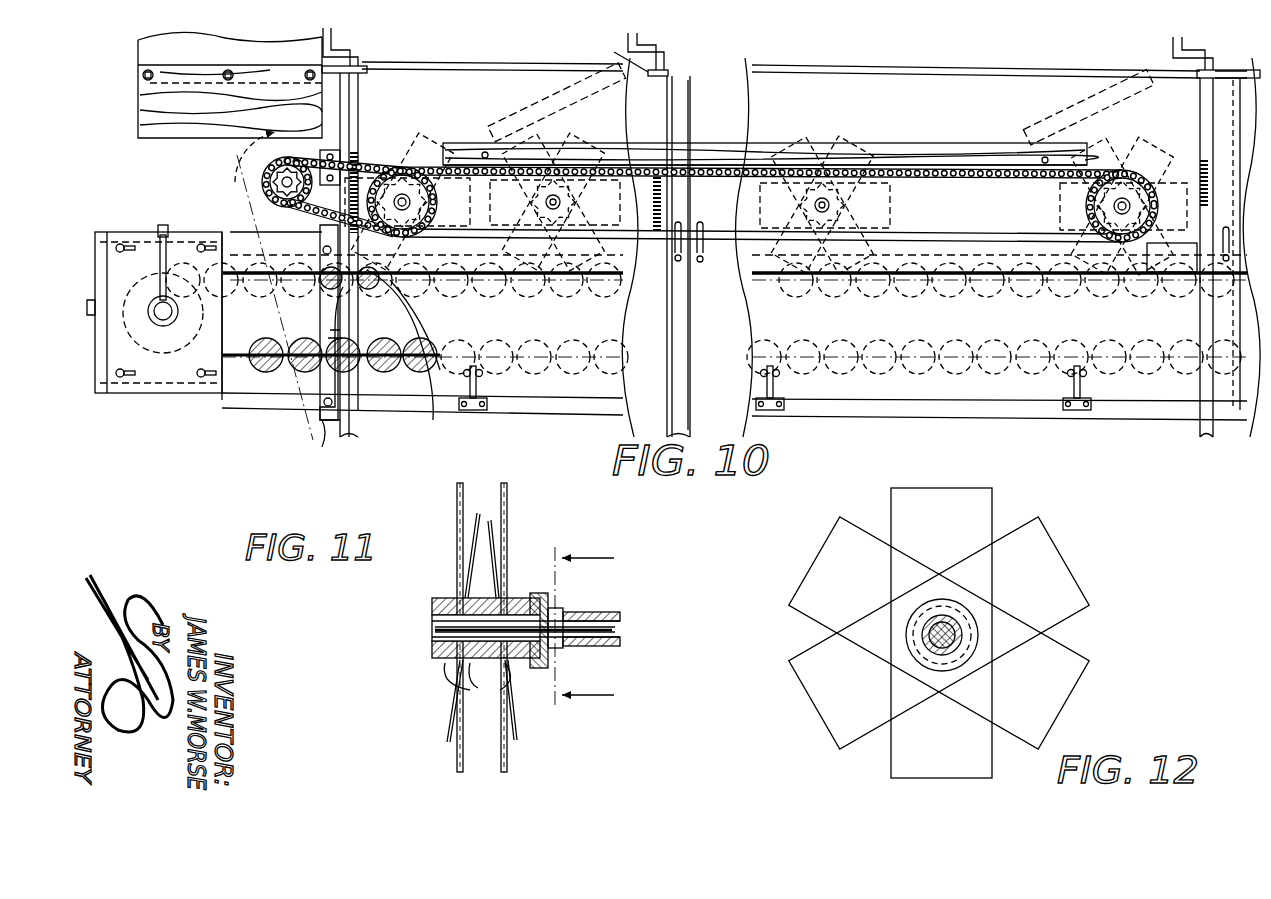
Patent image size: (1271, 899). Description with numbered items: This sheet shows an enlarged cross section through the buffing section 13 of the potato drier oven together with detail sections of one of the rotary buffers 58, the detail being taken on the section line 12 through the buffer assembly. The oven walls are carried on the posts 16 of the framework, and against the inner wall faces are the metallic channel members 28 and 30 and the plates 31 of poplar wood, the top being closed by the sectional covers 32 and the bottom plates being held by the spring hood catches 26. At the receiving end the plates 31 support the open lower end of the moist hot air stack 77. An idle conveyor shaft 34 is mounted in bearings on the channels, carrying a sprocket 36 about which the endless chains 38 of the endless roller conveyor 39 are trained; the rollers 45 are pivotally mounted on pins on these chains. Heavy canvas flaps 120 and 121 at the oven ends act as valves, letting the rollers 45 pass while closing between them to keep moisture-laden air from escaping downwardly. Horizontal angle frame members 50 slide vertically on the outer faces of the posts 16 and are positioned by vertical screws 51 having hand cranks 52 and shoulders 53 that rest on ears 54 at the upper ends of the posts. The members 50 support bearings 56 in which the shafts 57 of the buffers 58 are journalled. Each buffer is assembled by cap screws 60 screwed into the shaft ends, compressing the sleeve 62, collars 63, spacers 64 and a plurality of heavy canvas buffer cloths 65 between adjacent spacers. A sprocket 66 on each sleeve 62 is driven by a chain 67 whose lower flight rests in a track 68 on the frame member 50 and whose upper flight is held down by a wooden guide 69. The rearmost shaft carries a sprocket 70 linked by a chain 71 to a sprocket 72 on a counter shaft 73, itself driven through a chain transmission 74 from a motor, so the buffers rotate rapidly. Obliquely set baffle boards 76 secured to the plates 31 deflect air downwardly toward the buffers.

In FIG. 10, the buffing section 13 is at (1022, 92).
In FIG. 10, the posts 16 is at (322, 432).
In FIG. 10, the spring hood catches 26 is at (486, 404).
In FIG. 10, the metallic channel member 28 is at (238, 388).
In FIG. 10, the metallic channel member 30 is at (235, 250).
In FIG. 10, the plates of poplar wood 31 is at (143, 117).
In FIG. 10, the sectional covers 32 is at (978, 64).
In FIG. 10, the idle conveyor shaft 34 is at (163, 318).
In FIG. 10, the sprocket 36 is at (215, 316).
In FIG. 10, the endless chains 38 is at (1005, 290).
In FIG. 10, the endless roller conveyor 39 is at (420, 374).
In FIG. 10, the rollers 45 is at (265, 343).
In FIG. 10, the horizontal angle frame members 50 is at (1150, 274).
In FIG. 10, the vertical screws 51 is at (364, 90).
In FIG. 10, the hand cranks 52 is at (342, 42).
In FIG. 10, the shoulders 53 is at (364, 68).
In FIG. 10, the ears 54 is at (368, 72).
In FIG. 10, the bearings 56 is at (436, 209).
In FIG. 10, the shafts 57 is at (432, 194).
In FIG. 10, the rotary buffers 58 is at (386, 150).
In FIG. 10, the cap screws 60 is at (406, 204).
In FIG. 11, the sleeve 62 is at (603, 648).
In FIG. 11, the collars 63 is at (543, 595).
In FIG. 11, the spacers 64 is at (470, 690).
In FIG. 11, the heavy canvas buffer cloths 65 is at (475, 522).
In FIG. 10, the sprocket 66 is at (540, 211).
In FIG. 10, the chain 67 is at (918, 170).
In FIG. 10, the track 68 is at (880, 282).
In FIG. 10, the wooden guide 69 is at (970, 150).
In FIG. 10, the sprocket 70 is at (413, 186).
In FIG. 10, the chain 71 is at (362, 165).
In FIG. 10, the sprocket 72 is at (282, 181).
In FIG. 10, the counter shaft 73 is at (284, 183).
In FIG. 10, the chain transmission 74 is at (372, 400).
In FIG. 10, the baffle boards 76 is at (528, 111).
In FIG. 10, the moist hot air stack 77 is at (143, 47).
In FIG. 10, the heavy canvas flap 120 is at (332, 372).
In FIG. 10, the heavy canvas flap 121 is at (357, 290).
In FIG. 11, the section line 12- 12 is at (584, 626).